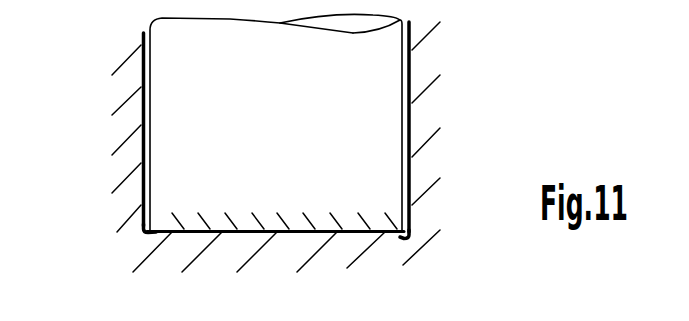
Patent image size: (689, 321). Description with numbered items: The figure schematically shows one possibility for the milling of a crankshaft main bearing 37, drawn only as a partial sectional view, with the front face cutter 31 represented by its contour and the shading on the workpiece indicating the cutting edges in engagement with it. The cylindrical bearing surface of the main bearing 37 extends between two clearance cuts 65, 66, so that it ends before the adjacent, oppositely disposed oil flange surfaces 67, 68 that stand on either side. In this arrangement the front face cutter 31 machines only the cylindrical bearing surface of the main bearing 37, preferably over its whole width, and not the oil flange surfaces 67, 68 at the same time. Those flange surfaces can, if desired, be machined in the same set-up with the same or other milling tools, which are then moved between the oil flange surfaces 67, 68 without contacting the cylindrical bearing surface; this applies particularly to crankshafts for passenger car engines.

The front face cutter 31 is at (302, 146).
The main bearing 37 is at (285, 273).
The clearance cut 65 is at (143, 233).
The clearance cut 66 is at (408, 238).
The oil flange surface 67 is at (142, 113).
The oil flange surface 68 is at (412, 108).